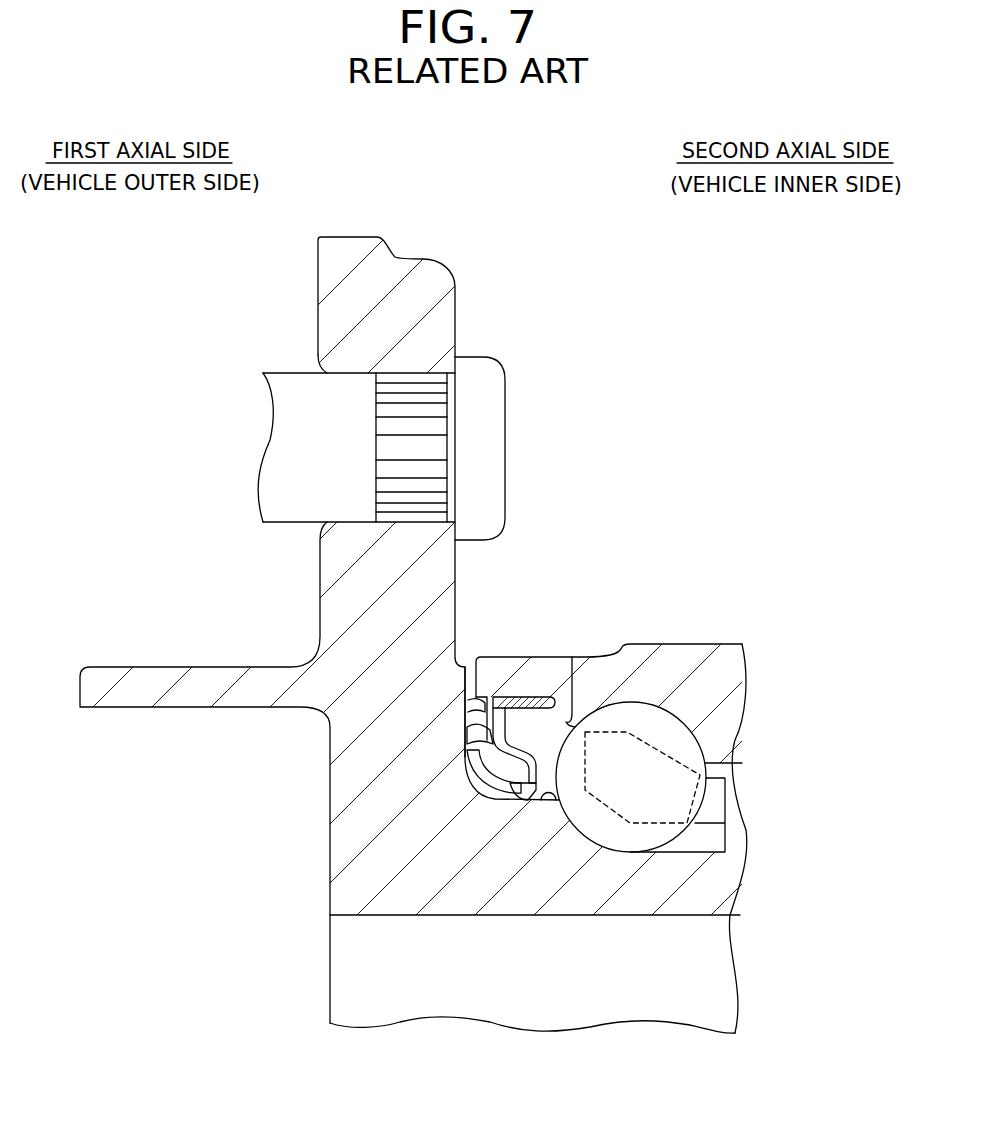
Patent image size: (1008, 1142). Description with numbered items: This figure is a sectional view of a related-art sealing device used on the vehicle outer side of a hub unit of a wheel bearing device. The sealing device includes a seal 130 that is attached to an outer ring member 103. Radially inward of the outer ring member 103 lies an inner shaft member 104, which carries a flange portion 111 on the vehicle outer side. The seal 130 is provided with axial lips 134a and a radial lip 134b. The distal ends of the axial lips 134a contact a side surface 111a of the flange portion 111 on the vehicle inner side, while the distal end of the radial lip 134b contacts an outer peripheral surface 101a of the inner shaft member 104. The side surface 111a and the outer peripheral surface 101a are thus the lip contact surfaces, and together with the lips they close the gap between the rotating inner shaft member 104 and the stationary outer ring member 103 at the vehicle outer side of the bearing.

The flange portion 111 is at (348, 248).
The side surface of the flange portion 111a is at (466, 720).
The outer ring member 103 is at (677, 641).
The inner shaft member 104 is at (707, 882).
The seal 130 is at (411, 779).
The axial lips 134a is at (466, 750).
The radial lip 134b is at (528, 803).
The outer peripheral surface of the inner shaft member 101a is at (555, 803).